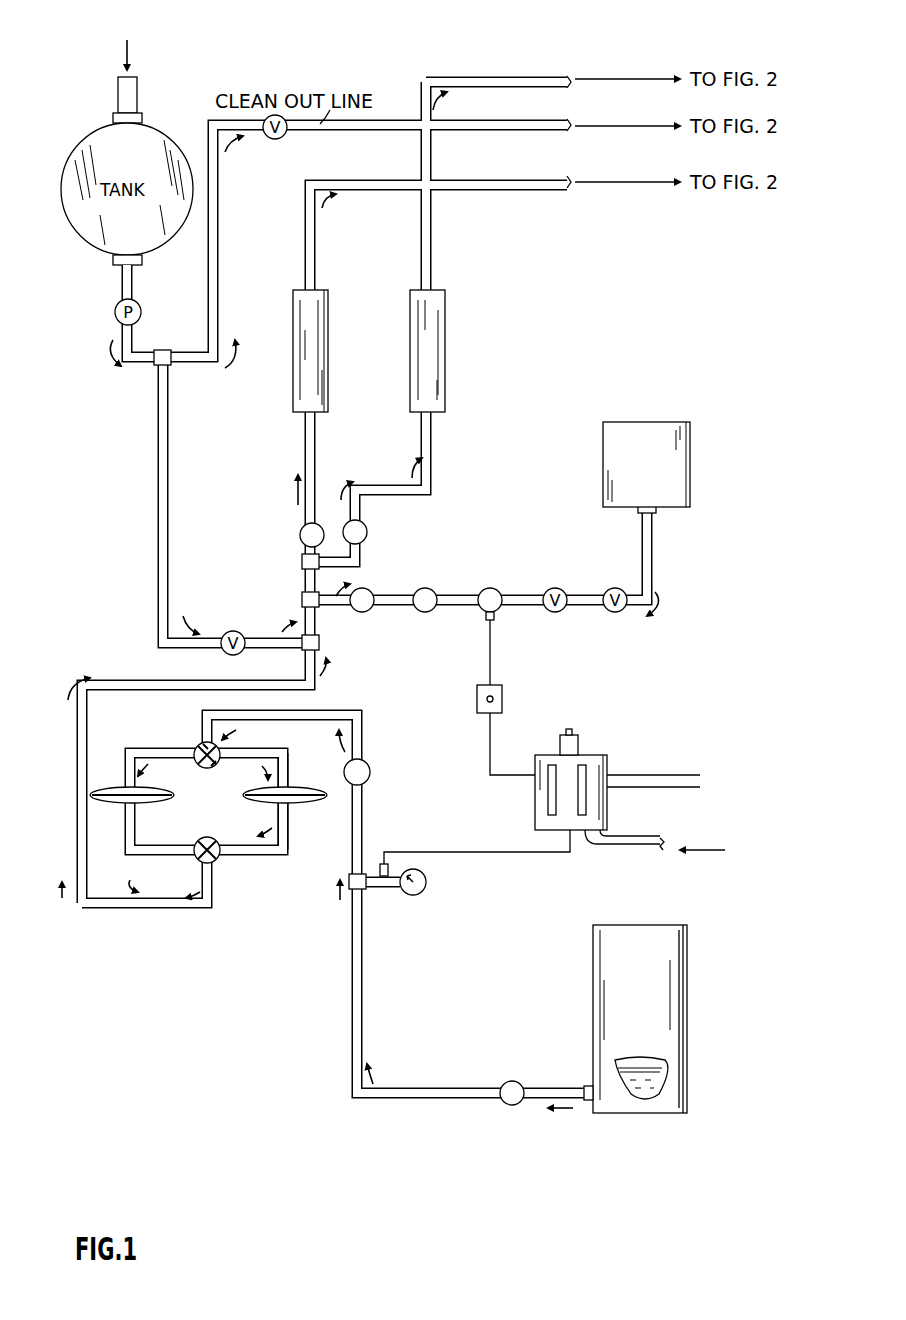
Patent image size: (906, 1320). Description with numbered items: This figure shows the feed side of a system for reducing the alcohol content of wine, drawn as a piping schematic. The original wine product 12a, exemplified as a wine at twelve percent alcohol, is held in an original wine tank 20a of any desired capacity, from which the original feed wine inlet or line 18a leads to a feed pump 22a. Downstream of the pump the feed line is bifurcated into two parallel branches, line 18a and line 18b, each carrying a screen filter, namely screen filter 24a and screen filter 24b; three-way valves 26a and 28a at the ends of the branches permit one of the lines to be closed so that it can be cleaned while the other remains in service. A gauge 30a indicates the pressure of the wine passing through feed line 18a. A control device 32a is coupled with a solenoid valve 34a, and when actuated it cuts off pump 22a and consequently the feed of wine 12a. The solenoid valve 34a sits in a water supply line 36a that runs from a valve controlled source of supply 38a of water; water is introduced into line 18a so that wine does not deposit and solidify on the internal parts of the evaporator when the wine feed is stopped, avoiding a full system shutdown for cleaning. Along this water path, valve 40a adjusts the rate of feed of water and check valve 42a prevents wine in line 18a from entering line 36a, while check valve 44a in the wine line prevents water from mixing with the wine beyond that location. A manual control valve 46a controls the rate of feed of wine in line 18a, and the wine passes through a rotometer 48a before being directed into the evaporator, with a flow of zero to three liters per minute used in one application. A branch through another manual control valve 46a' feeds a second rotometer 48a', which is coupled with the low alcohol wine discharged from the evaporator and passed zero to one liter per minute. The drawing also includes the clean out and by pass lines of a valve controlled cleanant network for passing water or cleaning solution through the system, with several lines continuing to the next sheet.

The original wine product 12a is at (660, 1084).
The original feed wine inlet or line 18a is at (498, 173).
The bifurcated line 18b is at (290, 836).
The original wine tank 20a is at (504, 82).
The feed pump 22a is at (504, 1104).
The screen filter 24a is at (148, 802).
The screen filter 24b is at (268, 802).
The three-way valve 26a is at (198, 746).
The three-way valve 28a is at (216, 862).
The gauge 30a is at (426, 884).
The control device 32a is at (600, 758).
The solenoid valve 34a is at (512, 583).
The water supply line 36a is at (652, 552).
The valve controlled source of supply of water 38a is at (640, 428).
The valve 40a is at (426, 589).
The check valve 42a is at (362, 612).
The check valve 44a is at (372, 778).
The manual control valve 46a is at (279, 526).
The manual control valve 46a' is at (392, 527).
The rotometer 48a is at (394, 351).
The second rotometer 48a' is at (343, 351).